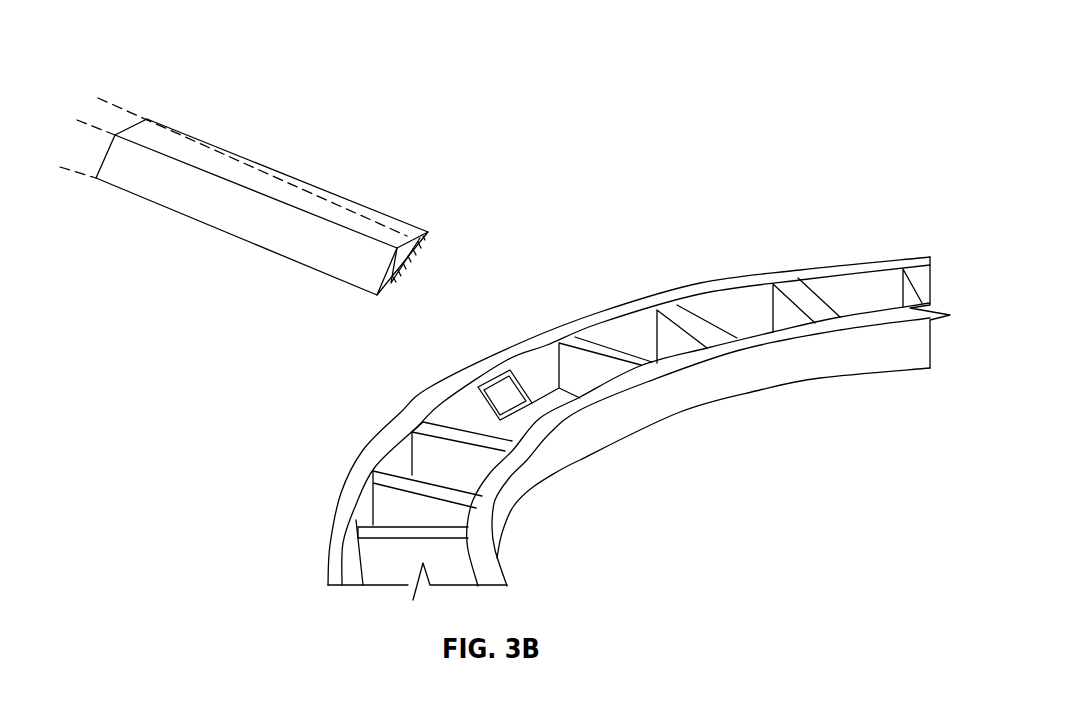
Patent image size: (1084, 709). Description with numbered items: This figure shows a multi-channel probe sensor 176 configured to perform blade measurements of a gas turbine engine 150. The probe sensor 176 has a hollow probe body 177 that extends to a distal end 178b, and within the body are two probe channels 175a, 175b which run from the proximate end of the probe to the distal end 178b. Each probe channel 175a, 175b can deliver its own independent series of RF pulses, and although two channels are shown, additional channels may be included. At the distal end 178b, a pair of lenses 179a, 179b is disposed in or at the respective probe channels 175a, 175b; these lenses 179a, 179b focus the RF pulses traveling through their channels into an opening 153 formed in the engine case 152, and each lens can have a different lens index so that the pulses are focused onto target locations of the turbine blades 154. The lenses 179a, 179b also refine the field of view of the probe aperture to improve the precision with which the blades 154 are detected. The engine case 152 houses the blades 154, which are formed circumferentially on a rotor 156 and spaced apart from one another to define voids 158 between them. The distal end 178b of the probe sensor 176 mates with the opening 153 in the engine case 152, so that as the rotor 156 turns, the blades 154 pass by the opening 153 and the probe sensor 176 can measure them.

The gas turbine engine 150 is at (639, 388).
The engine case 152 is at (735, 278).
The opening 153 is at (508, 387).
The blades 154 is at (682, 313).
The rotor 156 is at (620, 417).
The voids 158 is at (652, 362).
The probe sensor 176 is at (284, 186).
The hollow probe body 177 is at (228, 218).
The probe channel 175a is at (247, 164).
The probe channel 175b is at (294, 196).
The distal end 178b is at (367, 205).
The lens 179a is at (420, 252).
The lens 179b is at (408, 278).